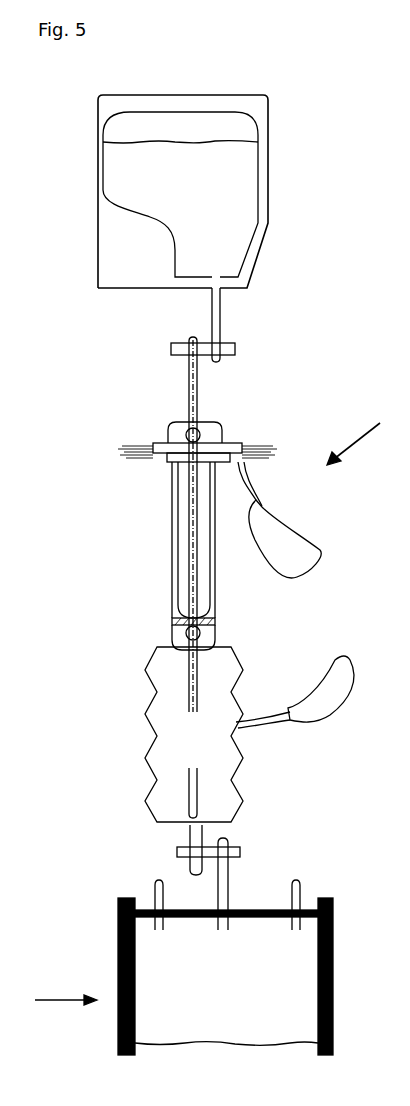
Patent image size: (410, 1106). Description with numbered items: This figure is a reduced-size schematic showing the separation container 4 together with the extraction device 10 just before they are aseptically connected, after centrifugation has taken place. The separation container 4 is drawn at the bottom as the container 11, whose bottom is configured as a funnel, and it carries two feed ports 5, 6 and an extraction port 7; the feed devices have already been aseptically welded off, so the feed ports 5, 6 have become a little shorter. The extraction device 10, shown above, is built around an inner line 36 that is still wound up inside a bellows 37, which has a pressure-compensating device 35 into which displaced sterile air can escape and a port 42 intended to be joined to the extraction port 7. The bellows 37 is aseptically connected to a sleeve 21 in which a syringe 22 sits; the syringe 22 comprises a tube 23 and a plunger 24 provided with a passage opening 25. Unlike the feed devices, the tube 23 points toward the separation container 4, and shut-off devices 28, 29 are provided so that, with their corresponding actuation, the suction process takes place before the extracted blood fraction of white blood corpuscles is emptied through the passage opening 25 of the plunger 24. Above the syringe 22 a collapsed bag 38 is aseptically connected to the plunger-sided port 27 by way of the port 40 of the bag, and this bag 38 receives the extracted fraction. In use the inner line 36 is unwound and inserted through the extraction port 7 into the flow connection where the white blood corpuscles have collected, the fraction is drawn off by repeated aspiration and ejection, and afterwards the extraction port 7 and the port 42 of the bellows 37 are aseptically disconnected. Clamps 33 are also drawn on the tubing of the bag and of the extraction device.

The separation container 4 is at (66, 988).
The feed port 5 is at (155, 884).
The feed port 6 is at (297, 888).
The extraction port 7 is at (225, 835).
The extraction device 10 is at (368, 435).
The container 11 is at (236, 1004).
The sleeve 21 is at (172, 630).
The syringe 22 is at (165, 534).
The tube 23 is at (178, 615).
The plunger 24 is at (182, 452).
The passage opening 25 is at (192, 550).
The plunger-sided port 27 is at (197, 388).
The shut-off device 28 is at (168, 437).
The shut-off device 29 is at (200, 630).
The clamp 33 is at (171, 348).
The pressure-compensating device 35 is at (270, 523).
The inner line 36 is at (172, 732).
The bellows 37 is at (237, 770).
The collapsed bag 38 is at (222, 220).
The port of the bag 40 is at (222, 320).
The port of the bellows 42 is at (192, 833).